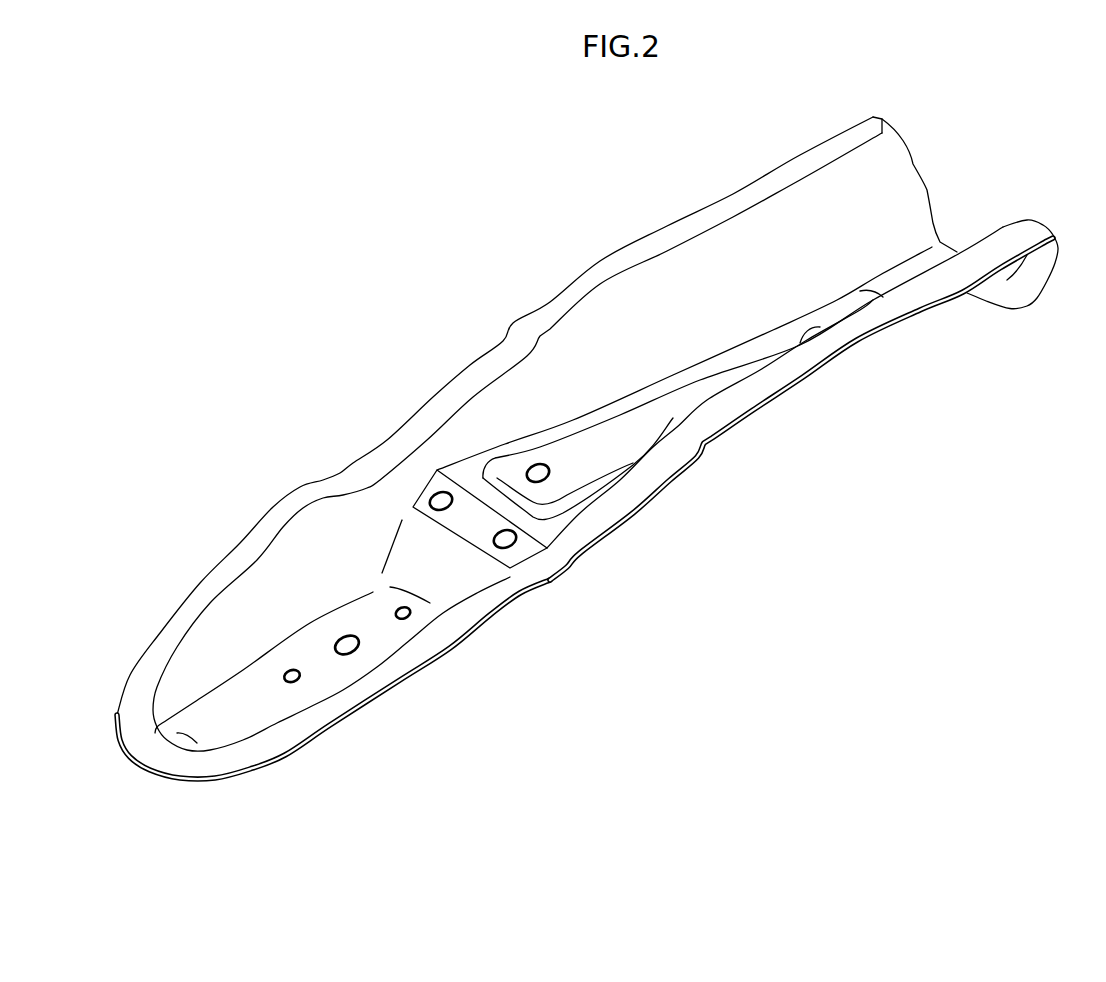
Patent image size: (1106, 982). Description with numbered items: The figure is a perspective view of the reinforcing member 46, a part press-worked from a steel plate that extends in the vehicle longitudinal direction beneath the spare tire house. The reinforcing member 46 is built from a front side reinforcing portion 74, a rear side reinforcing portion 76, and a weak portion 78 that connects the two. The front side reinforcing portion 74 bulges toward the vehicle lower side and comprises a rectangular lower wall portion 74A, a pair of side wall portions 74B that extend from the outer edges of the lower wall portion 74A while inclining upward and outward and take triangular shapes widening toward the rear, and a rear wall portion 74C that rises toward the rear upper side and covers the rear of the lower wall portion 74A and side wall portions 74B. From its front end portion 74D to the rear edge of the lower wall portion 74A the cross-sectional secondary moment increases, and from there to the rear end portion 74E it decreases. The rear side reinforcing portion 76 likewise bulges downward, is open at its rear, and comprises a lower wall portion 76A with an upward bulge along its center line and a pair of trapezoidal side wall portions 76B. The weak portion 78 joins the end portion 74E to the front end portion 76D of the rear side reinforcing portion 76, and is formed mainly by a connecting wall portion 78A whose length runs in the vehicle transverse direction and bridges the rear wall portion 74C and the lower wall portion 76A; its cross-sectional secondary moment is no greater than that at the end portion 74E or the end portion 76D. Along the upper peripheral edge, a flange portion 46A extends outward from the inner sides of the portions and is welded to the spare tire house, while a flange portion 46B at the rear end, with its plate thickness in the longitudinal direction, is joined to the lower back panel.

The reinforcing member 46 is at (604, 482).
The flange portion 46A is at (411, 418).
The flange portion 46B is at (1033, 288).
The front side reinforcing portion 74 is at (499, 490).
The lower wall portion 74A is at (278, 698).
The side wall portions 74B is at (278, 587).
The rear wall portion 74C is at (462, 583).
The end portion 74D is at (180, 737).
The end portion 74E is at (543, 542).
The rear side reinforcing portion 76 is at (745, 348).
The lower wall portion 76A is at (800, 343).
The side wall portions 76B is at (667, 287).
The end portion 76D is at (557, 530).
The weak portion 78 is at (558, 538).
The connecting wall portion 78A is at (548, 550).